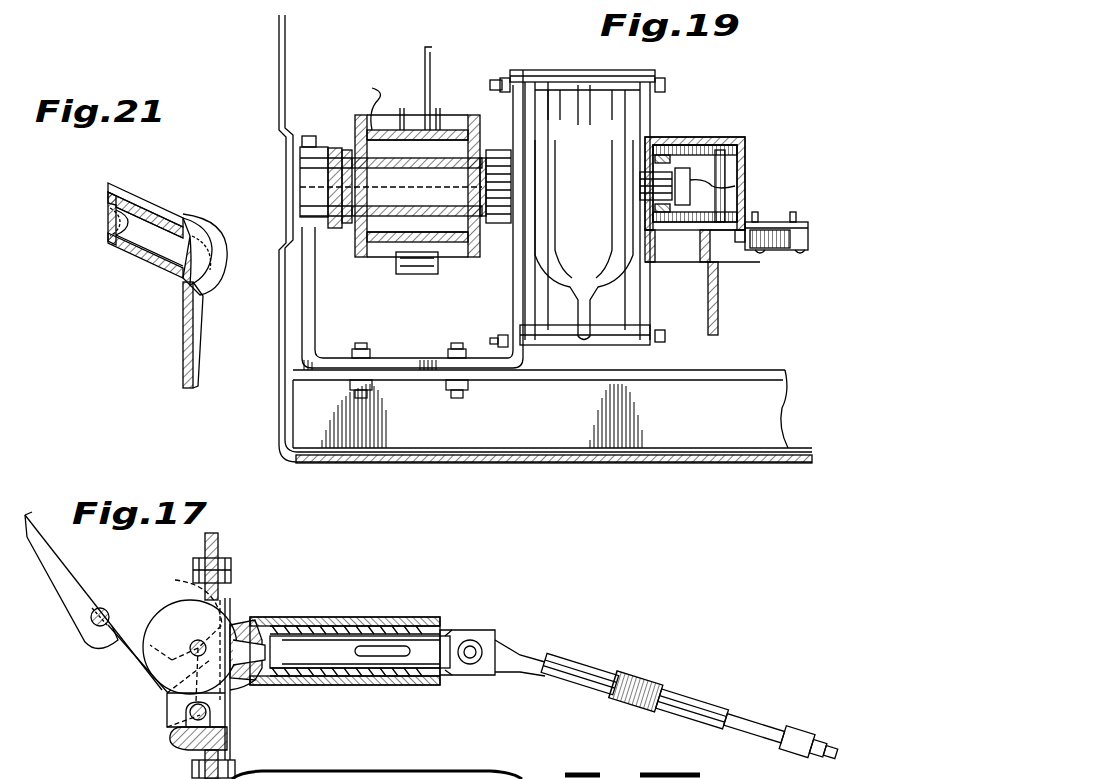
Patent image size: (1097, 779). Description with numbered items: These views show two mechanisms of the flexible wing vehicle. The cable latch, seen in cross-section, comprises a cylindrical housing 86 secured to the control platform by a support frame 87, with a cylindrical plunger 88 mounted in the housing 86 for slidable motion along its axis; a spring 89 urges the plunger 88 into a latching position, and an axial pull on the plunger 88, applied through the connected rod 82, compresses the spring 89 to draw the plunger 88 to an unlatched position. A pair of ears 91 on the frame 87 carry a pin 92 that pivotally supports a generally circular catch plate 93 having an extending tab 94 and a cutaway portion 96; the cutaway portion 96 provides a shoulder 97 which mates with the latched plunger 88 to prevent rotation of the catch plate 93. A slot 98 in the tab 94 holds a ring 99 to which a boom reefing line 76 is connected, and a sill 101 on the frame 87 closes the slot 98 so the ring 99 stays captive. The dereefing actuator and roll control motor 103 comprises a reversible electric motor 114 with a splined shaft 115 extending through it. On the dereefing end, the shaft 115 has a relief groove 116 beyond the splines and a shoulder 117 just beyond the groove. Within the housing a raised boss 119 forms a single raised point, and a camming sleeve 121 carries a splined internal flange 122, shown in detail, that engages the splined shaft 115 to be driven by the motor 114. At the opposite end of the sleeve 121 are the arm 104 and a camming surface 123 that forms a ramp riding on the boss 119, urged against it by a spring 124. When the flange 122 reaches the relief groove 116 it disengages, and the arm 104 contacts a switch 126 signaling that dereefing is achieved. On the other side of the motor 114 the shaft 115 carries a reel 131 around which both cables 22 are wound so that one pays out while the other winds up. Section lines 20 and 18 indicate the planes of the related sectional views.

In FIG. 19, the section line 20- 20 is at (518, 494).
In FIG. 19, the cables 22 is at (422, 60).
In FIG. 19, the dereefing actuator and roll control motor 103 is at (660, 70).
In FIG. 19, the arm 104 is at (720, 318).
In FIG. 21, the arm 104 is at (183, 338).
In FIG. 19, the reversible electric motor 114 is at (580, 147).
In FIG. 19, the splined shaft 115 is at (650, 198).
In FIG. 19, the relief groove 116 is at (692, 190).
In FIG. 19, the shoulder 117 is at (680, 205).
In FIG. 19, the raised boss 119 is at (745, 148).
In FIG. 19, the camming sleeve 121 is at (668, 140).
In FIG. 21, the camming sleeve 121 is at (92, 238).
In FIG. 21, the splined internal flange 122 is at (104, 216).
In FIG. 19, the camming surface 123 is at (727, 165).
In FIG. 21, the camming surface 123 is at (210, 280).
In FIG. 19, the spring 124 is at (700, 135).
In FIG. 19, the switch 126 is at (780, 245).
In FIG. 19, the reel 131 is at (440, 262).
In FIG. 17, the boom reefing line 76 is at (60, 560).
In FIG. 17, the connecting rod 82 is at (565, 667).
In FIG. 17, the cylindrical housing 86 is at (300, 617).
In FIG. 17, the support frame 87 is at (222, 545).
In FIG. 17, the cylindrical plunger 88 is at (420, 645).
In FIG. 17, the spring 89 is at (365, 620).
In FIG. 17, the ears 91 is at (185, 575).
In FIG. 17, the pin 92 is at (165, 680).
In FIG. 17, the catch plate 93 is at (148, 625).
In FIG. 17, the tab 94 is at (167, 720).
In FIG. 17, the cutaway portion 96 is at (270, 688).
In FIG. 17, the shoulder 97 is at (248, 612).
In FIG. 17, the slot 98 is at (212, 713).
In FIG. 17, the ring 99 is at (130, 668).
In FIG. 17, the sill 101 is at (175, 750).
In FIG. 17, the section line 18- 18 is at (265, 648).